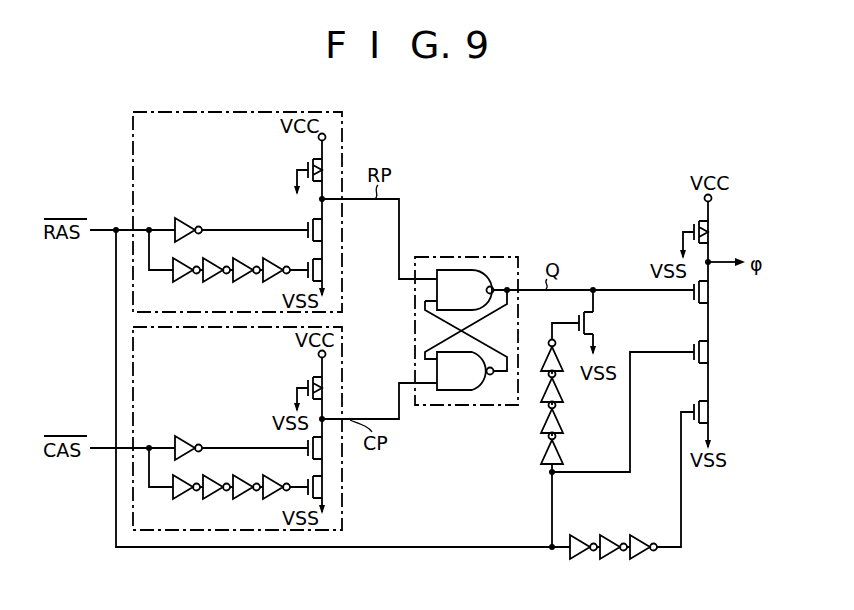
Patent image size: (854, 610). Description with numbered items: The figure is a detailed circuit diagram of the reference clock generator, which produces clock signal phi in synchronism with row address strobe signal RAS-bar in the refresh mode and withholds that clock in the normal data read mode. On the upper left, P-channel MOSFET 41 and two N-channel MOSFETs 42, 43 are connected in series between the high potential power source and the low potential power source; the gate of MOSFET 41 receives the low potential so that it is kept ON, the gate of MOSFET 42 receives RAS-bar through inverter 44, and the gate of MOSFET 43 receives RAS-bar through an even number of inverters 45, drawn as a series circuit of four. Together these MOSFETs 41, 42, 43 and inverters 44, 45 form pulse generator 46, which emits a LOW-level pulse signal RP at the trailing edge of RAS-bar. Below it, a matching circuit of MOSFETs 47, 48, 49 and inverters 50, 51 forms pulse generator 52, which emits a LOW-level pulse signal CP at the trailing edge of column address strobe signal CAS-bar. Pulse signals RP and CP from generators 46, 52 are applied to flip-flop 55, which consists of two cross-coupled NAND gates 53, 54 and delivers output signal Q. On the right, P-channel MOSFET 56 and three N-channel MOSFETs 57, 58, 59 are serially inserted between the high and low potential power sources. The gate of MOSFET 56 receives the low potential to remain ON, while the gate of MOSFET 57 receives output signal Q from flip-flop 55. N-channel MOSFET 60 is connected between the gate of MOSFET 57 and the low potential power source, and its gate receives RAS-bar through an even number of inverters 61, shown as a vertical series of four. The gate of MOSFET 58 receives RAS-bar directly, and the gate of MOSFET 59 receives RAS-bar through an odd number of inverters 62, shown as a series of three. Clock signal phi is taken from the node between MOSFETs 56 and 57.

The P-channel MOSFET 41 is at (300, 163).
The N-channel MOSFET 42 is at (323, 231).
The N-channel MOSFET 43 is at (323, 271).
The inverter 44 is at (186, 218).
The inverters 45 is at (181, 278).
The pulse generator 46 is at (342, 140).
The MOSFET 47 is at (310, 376).
The MOSFET 48 is at (323, 450).
The MOSFET 49 is at (323, 490).
The inverter 50 is at (184, 437).
The inverters 51 is at (179, 495).
The pulse generator 52 is at (226, 530).
The NAND gate 53 is at (452, 270).
The NAND gate 54 is at (458, 390).
The flip-flop 55 is at (506, 257).
The P-channel MOSFET 56 is at (715, 231).
The N-channel MOSFET 57 is at (710, 293).
The N-channel MOSFET 58 is at (710, 353).
The N-channel MOSFET 59 is at (710, 413).
The N-channel MOSFET 60 is at (593, 323).
The inverters 61 is at (556, 358).
The inverters 62 is at (578, 557).